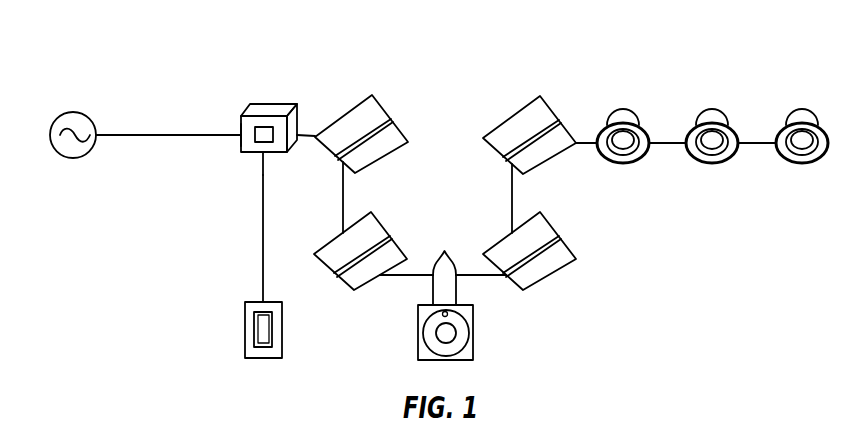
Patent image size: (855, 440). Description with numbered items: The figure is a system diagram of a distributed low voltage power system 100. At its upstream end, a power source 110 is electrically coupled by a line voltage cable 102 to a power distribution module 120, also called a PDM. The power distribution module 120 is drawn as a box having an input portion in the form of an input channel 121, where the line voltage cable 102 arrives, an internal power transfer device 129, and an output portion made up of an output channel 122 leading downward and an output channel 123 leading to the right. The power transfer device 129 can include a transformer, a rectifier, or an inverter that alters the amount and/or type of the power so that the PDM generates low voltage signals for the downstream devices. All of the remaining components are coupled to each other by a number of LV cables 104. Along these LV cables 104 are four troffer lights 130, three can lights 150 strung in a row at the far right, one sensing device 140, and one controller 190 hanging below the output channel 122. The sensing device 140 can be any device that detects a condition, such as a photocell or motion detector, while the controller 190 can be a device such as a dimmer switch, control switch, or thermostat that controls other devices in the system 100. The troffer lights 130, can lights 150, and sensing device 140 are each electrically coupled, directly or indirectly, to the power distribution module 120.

The distributed low voltage power system 100 is at (99, 50).
The power source 110 is at (75, 112).
The line voltage cable 102 is at (150, 133).
The power distribution module 120 is at (275, 98).
The input channel 121 is at (241, 130).
The power transfer device 129 is at (255, 136).
The output channel 122 is at (263, 154).
The output channel 123 is at (302, 134).
The LV cables 104 is at (303, 137).
The troffer lights 130 is at (381, 104).
The sensing device 140 is at (475, 331).
The can lights 150 is at (623, 112).
The controller 190 is at (245, 330).